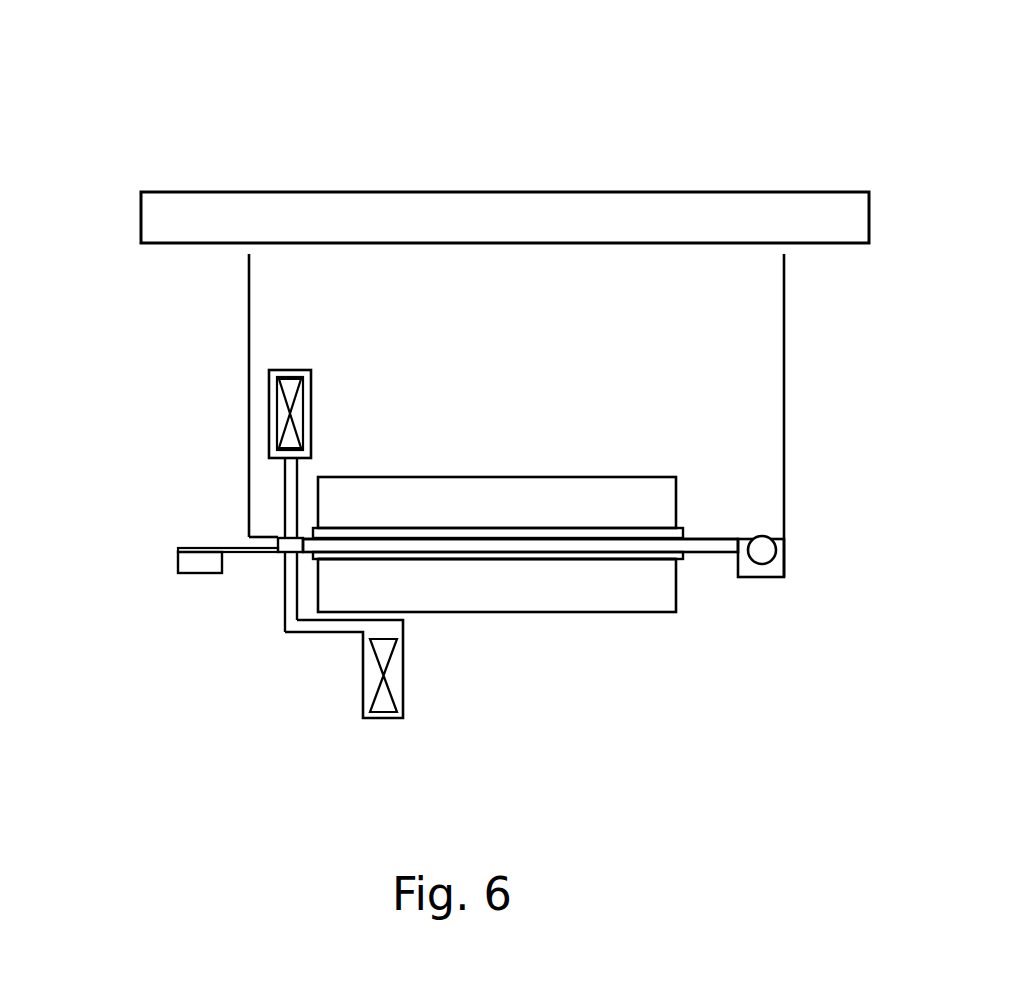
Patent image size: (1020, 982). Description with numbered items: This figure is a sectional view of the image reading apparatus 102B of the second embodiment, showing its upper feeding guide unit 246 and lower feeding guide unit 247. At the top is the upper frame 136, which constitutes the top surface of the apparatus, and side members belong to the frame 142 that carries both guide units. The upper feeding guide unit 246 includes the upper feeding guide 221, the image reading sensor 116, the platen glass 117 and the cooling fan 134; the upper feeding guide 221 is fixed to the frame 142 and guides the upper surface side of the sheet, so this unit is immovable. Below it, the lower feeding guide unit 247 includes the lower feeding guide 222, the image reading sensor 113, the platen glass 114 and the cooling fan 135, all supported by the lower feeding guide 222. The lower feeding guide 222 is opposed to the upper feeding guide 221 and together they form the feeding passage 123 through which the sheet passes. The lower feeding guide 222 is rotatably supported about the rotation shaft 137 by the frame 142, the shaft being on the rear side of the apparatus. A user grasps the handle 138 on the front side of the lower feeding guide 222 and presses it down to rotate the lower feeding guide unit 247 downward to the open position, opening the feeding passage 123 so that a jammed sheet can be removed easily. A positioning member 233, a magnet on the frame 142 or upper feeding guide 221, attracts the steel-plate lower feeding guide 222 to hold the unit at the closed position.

The image reading apparatus 102B is at (512, 115).
The upper frame 136 is at (370, 190).
The frame 142 is at (786, 428).
The cooling fan 134 is at (278, 413).
The cooling fan 135 is at (370, 680).
The positioning member 233 is at (277, 542).
The feeding passage 123 is at (263, 543).
The handle 138 is at (185, 575).
The image reading sensor 116 is at (484, 495).
The platen glass 117 is at (603, 533).
The upper feeding guide 221 is at (710, 538).
The lower feeding guide 222 is at (711, 553).
The image reading sensor 113 is at (482, 600).
The platen glass 114 is at (603, 560).
The rotation shaft 137 is at (760, 550).
The upper feeding guide unit 246 is at (630, 455).
The lower feeding guide unit 247 is at (655, 645).